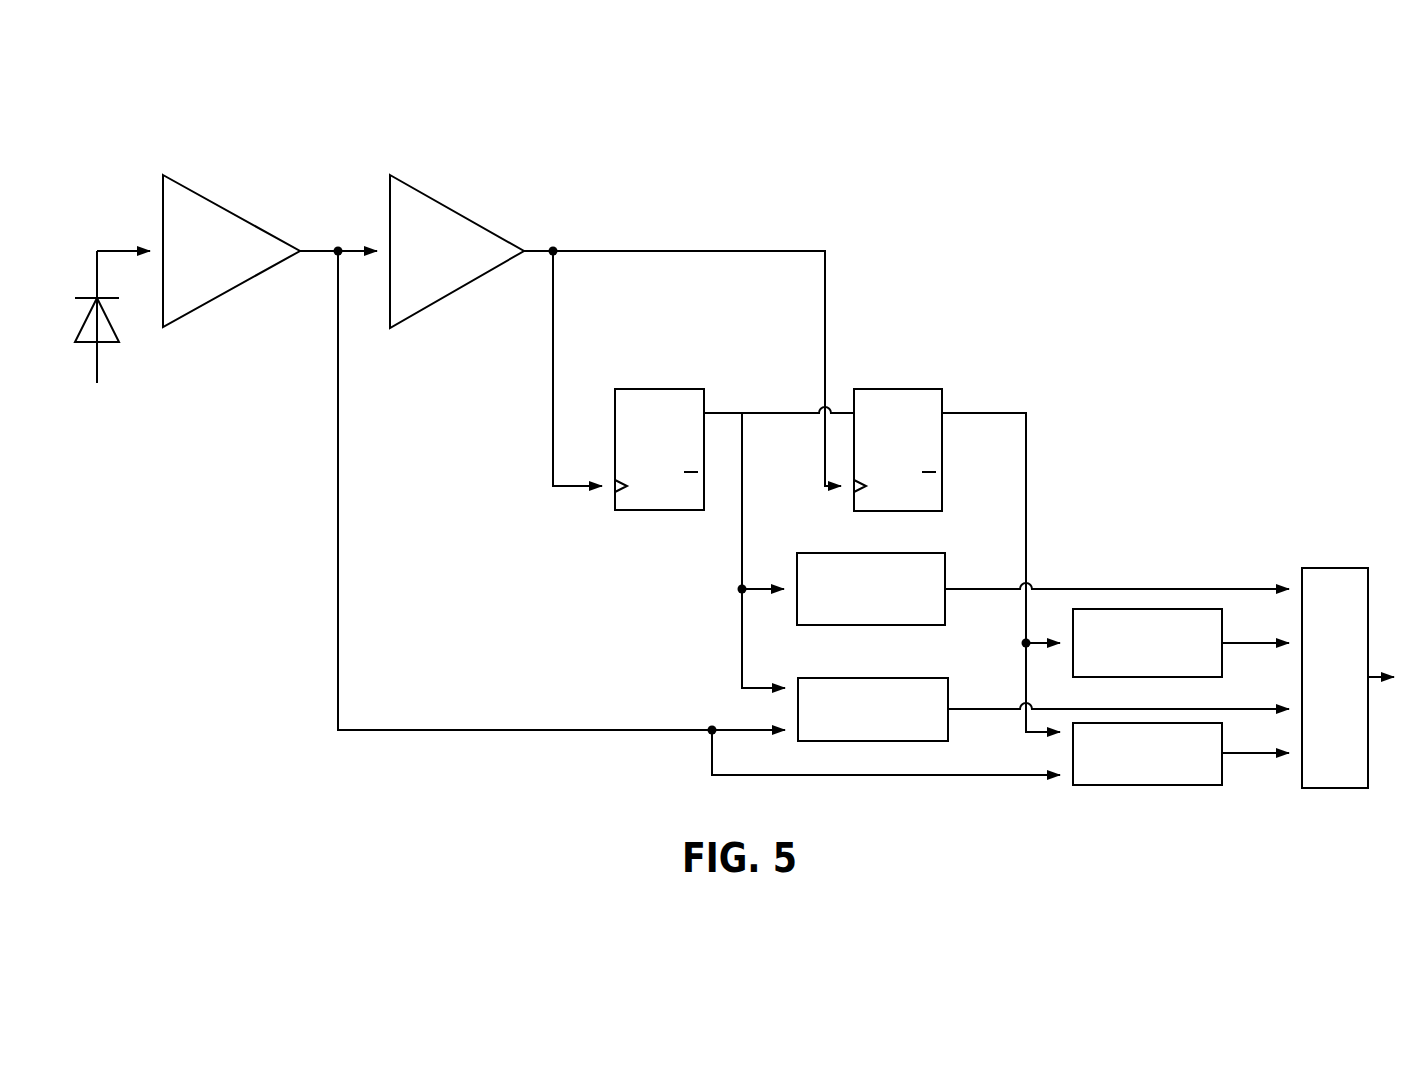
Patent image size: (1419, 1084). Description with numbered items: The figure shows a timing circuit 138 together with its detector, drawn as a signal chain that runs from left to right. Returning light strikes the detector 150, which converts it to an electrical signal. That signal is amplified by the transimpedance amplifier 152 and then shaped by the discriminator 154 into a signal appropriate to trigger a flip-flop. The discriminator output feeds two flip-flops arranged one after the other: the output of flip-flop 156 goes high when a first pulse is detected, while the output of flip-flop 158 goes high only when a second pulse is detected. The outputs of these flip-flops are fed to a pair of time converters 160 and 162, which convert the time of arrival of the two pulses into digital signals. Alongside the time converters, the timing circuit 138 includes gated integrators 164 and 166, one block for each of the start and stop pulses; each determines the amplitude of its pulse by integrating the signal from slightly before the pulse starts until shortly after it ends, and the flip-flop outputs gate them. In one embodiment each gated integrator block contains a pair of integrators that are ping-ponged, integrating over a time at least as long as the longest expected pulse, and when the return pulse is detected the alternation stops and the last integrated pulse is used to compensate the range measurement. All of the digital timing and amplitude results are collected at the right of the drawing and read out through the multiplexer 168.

The timing circuit 138 is at (1192, 188).
The detector 150 is at (103, 344).
The transimpedance amplifier 152 is at (228, 210).
The discriminator 154 is at (458, 210).
The flip-flop 156 is at (662, 389).
The flip-flop 158 is at (898, 389).
The time converter 160 is at (872, 553).
The time converter 162 is at (1148, 677).
The gated integrator 164 is at (873, 678).
The gated integrator 166 is at (1148, 785).
The multiplexer 168 is at (1337, 568).